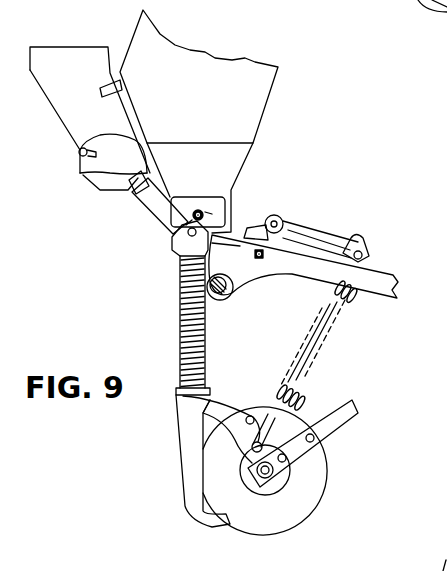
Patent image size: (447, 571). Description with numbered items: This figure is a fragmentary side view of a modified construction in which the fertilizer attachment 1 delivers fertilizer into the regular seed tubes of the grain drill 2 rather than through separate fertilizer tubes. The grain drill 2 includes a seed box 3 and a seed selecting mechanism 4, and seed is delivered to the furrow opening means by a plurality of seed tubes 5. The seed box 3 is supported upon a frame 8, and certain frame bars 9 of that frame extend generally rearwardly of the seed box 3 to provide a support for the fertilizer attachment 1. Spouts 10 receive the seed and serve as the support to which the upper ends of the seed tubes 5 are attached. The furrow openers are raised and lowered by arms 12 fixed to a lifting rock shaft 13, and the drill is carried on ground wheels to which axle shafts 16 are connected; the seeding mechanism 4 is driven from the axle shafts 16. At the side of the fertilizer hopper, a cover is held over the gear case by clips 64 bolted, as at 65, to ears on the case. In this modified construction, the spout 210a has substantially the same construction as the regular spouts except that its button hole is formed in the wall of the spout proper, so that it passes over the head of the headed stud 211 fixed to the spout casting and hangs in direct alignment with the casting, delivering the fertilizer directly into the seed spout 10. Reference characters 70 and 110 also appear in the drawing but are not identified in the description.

The fertilizer attachment 1 is at (54, 40).
The grain drill 2 is at (247, 54).
The seed box 3 is at (252, 113).
The seed selecting mechanism 4 is at (205, 212).
The seed tube 5 is at (186, 318).
The frame 8 is at (254, 233).
The frame bar 9 is at (384, 283).
The spout 10 is at (180, 250).
The arm 12 is at (333, 249).
The lifting rock shaft 13 is at (283, 222).
The axle shaft 16 is at (226, 289).
The clip 64 is at (107, 138).
The bolt 65 is at (79, 153).
The frame 70 is at (437, 555).
The housing 110 is at (382, 6).
The modified spout 210a is at (148, 207).
The headed stud 211 is at (160, 195).